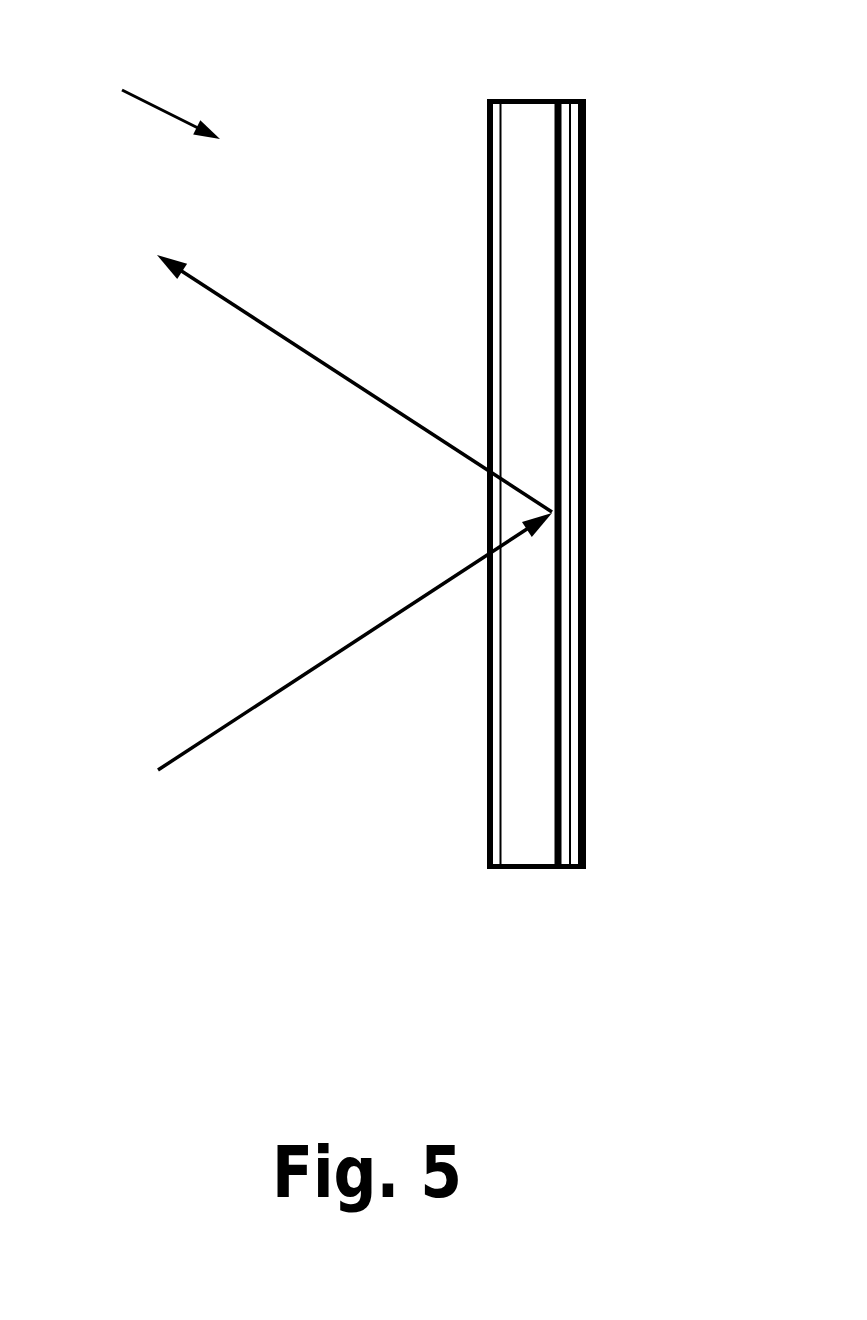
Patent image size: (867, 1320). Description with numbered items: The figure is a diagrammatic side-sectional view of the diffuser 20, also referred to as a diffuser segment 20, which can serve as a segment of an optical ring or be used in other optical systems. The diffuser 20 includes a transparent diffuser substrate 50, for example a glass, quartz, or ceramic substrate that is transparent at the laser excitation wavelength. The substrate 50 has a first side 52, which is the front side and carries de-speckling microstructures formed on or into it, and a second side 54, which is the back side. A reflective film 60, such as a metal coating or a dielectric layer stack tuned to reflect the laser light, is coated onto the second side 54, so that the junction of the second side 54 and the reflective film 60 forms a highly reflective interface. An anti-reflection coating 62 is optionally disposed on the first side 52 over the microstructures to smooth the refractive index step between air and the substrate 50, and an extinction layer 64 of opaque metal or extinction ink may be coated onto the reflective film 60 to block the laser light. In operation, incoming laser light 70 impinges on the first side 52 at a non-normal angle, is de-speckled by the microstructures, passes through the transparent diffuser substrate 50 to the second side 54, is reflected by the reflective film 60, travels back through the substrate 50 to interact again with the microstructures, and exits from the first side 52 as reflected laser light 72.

The diffuser segment 20 is at (152, 105).
The transparent diffuser substrate 50 is at (523, 100).
The first side 52 is at (497, 300).
The second side 54 is at (558, 300).
The reflective film 60 is at (560, 865).
The anti-reflection coating 62 is at (488, 135).
The extinction layer 64 is at (577, 870).
The incoming laser light 70 is at (315, 666).
The reflected laser light 72 is at (333, 368).